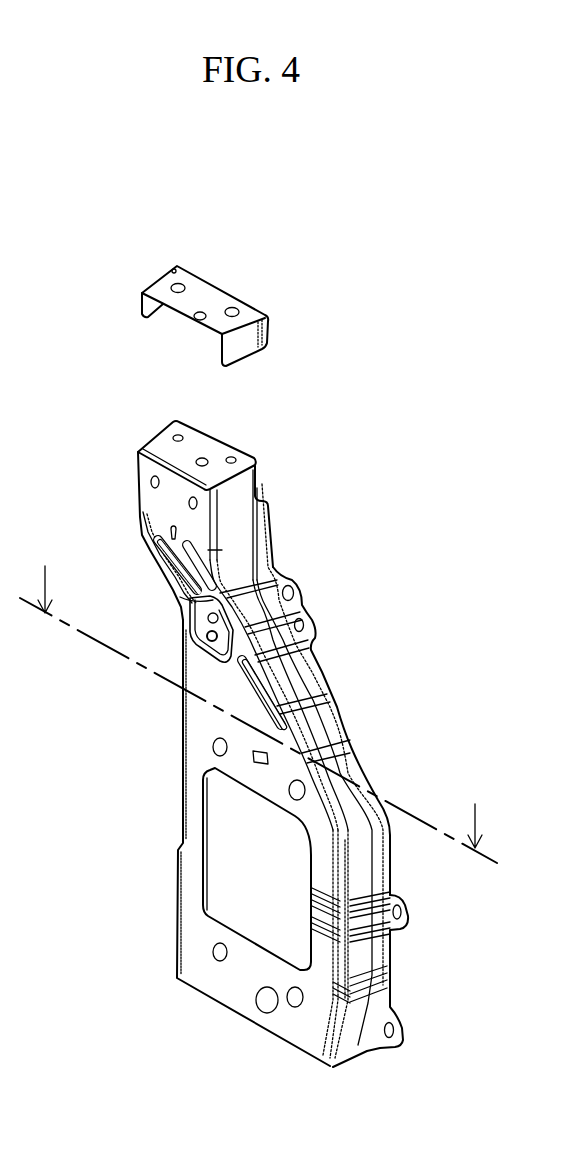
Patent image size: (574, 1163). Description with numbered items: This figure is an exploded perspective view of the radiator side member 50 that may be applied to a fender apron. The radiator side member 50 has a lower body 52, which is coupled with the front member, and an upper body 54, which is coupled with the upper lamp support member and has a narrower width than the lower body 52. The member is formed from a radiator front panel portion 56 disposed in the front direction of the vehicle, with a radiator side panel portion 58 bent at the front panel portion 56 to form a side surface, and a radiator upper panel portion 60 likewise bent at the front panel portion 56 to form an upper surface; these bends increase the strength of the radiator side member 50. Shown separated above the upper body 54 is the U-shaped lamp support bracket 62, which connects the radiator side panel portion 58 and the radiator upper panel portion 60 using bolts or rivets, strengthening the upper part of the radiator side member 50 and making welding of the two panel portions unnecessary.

The radiator side member 50 is at (364, 705).
The lower body 52 is at (382, 962).
The upper body 54 is at (287, 553).
The radiator front panel portion 56 is at (193, 937).
The radiator side panel portion 58 is at (243, 518).
The radiator upper panel portion 60 is at (220, 447).
The lamp support bracket 62 is at (229, 289).